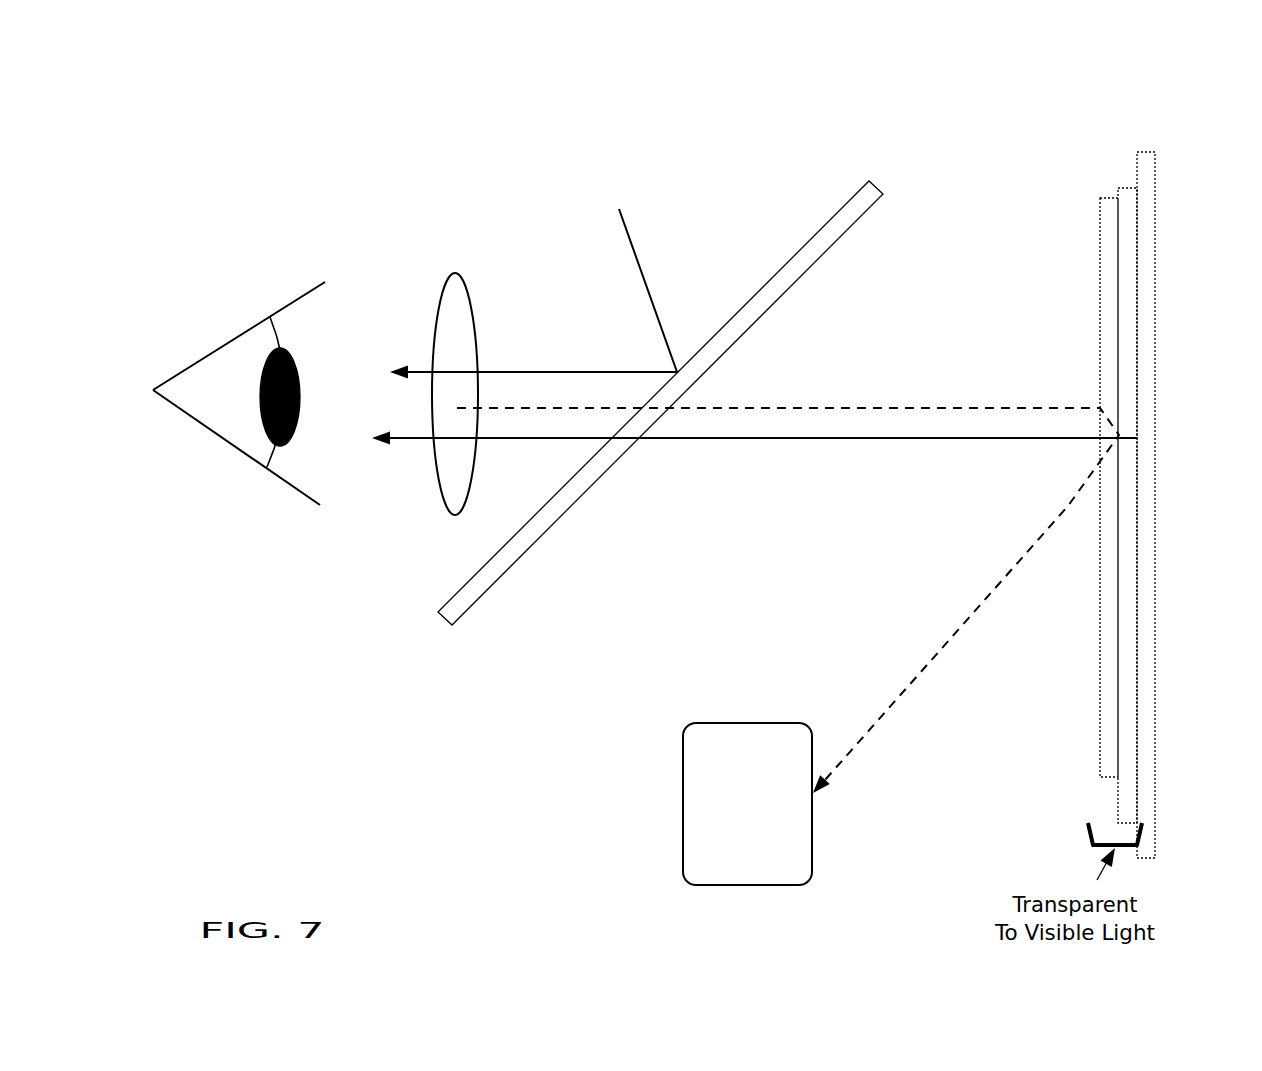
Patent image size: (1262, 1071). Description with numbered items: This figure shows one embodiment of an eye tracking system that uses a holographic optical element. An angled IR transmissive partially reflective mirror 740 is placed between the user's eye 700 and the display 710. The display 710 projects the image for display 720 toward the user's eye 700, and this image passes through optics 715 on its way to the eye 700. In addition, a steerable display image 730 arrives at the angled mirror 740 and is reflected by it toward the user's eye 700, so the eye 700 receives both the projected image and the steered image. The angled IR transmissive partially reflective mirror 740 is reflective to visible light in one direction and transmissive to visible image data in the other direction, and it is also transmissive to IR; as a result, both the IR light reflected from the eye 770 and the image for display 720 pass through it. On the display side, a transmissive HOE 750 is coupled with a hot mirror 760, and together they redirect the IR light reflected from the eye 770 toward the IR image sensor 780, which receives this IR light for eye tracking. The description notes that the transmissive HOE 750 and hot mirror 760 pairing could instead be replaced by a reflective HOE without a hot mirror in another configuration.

The eye 700 is at (239, 370).
The display 710 is at (1193, 505).
The optics 715 is at (443, 354).
The image for display 720 is at (754, 461).
The steerable display image 730 is at (533, 294).
The IR transmissive partially reflective angled mirror 740 is at (660, 376).
The transmissive HOE 750 is at (1090, 248).
The hot mirror 760 is at (1125, 172).
The IR light reflected from eye 770 is at (788, 568).
The IR image sensor 780 is at (747, 804).